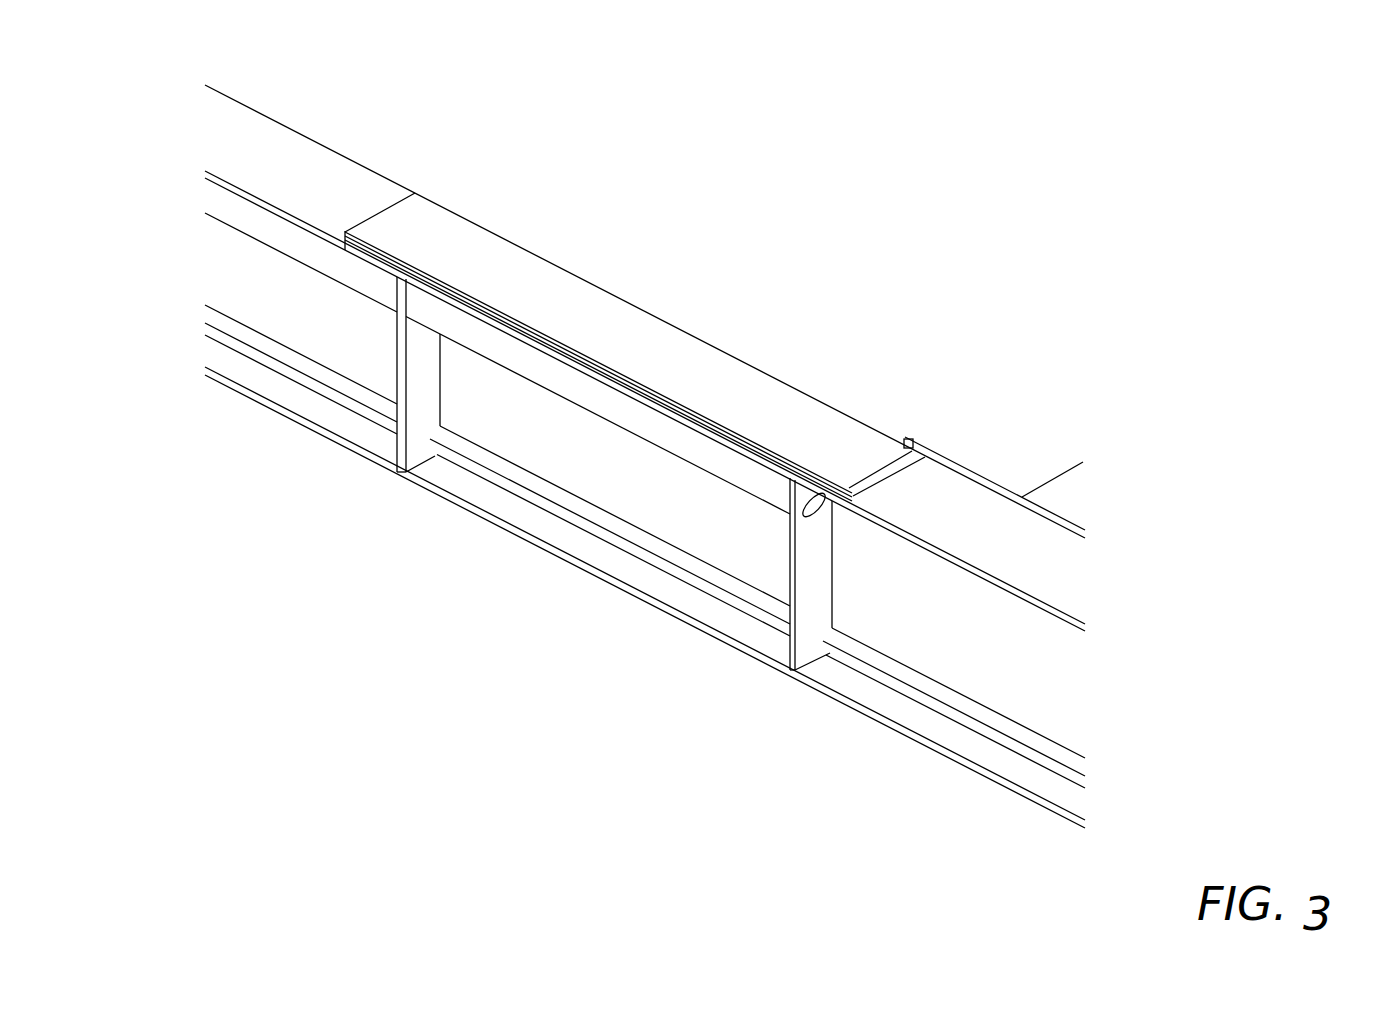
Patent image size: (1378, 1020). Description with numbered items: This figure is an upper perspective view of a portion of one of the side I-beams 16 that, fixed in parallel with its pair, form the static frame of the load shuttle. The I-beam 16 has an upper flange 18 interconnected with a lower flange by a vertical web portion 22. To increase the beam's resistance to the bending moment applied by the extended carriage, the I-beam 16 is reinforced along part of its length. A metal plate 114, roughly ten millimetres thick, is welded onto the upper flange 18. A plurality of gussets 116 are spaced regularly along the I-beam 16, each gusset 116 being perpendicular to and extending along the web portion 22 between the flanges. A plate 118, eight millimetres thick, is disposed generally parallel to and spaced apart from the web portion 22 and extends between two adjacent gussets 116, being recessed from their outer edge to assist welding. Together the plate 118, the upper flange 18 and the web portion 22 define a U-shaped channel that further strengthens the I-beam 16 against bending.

The side I-beam 16 is at (466, 470).
The upper flange 18 is at (967, 481).
The web portion 22 is at (950, 708).
The metal plate 114 is at (645, 311).
The gusset 116 is at (547, 482).
The plate 118 is at (645, 378).